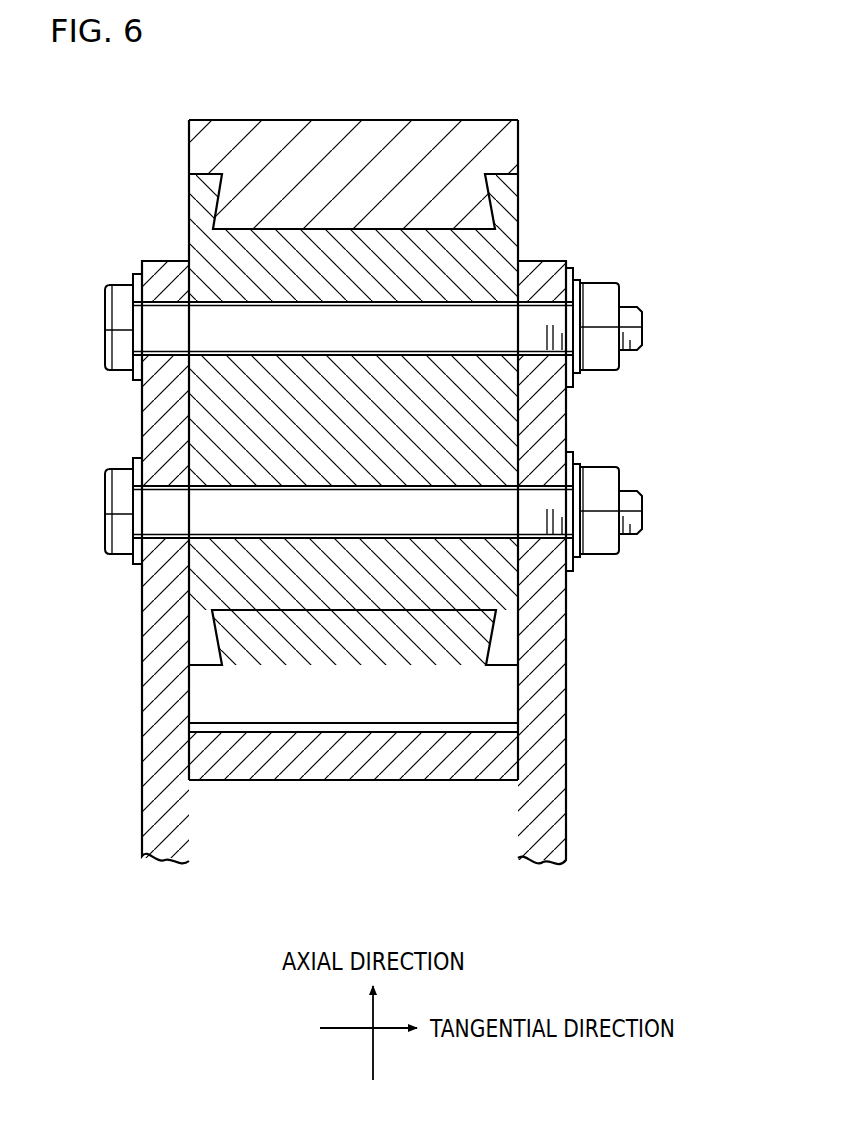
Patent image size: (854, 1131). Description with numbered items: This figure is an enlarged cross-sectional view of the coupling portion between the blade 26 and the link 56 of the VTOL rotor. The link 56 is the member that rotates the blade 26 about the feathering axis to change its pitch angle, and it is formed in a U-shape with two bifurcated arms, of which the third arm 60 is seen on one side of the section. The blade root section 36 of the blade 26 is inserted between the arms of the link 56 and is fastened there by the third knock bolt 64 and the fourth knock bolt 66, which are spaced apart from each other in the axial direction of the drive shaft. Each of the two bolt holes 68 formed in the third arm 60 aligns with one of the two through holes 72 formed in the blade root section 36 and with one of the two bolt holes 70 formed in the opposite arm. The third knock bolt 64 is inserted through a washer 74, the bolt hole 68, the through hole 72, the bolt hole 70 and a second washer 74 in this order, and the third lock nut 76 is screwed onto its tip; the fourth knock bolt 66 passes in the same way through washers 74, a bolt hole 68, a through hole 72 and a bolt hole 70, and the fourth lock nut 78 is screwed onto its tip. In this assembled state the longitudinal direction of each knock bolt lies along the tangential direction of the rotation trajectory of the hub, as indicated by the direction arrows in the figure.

The blade 26 is at (529, 105).
The blade root section 36 is at (428, 132).
The link 56 is at (139, 729).
The third arm 60 is at (158, 268).
The third knock bolt 64 is at (118, 493).
The fourth knock bolt 66 is at (118, 308).
The bolt hole 68 is at (172, 355).
The bolt hole 70 is at (547, 489).
The through hole 72 is at (462, 306).
The washer 74 is at (134, 374).
The third lock nut 76 is at (547, 305).
The fourth lock nut 78 is at (605, 300).